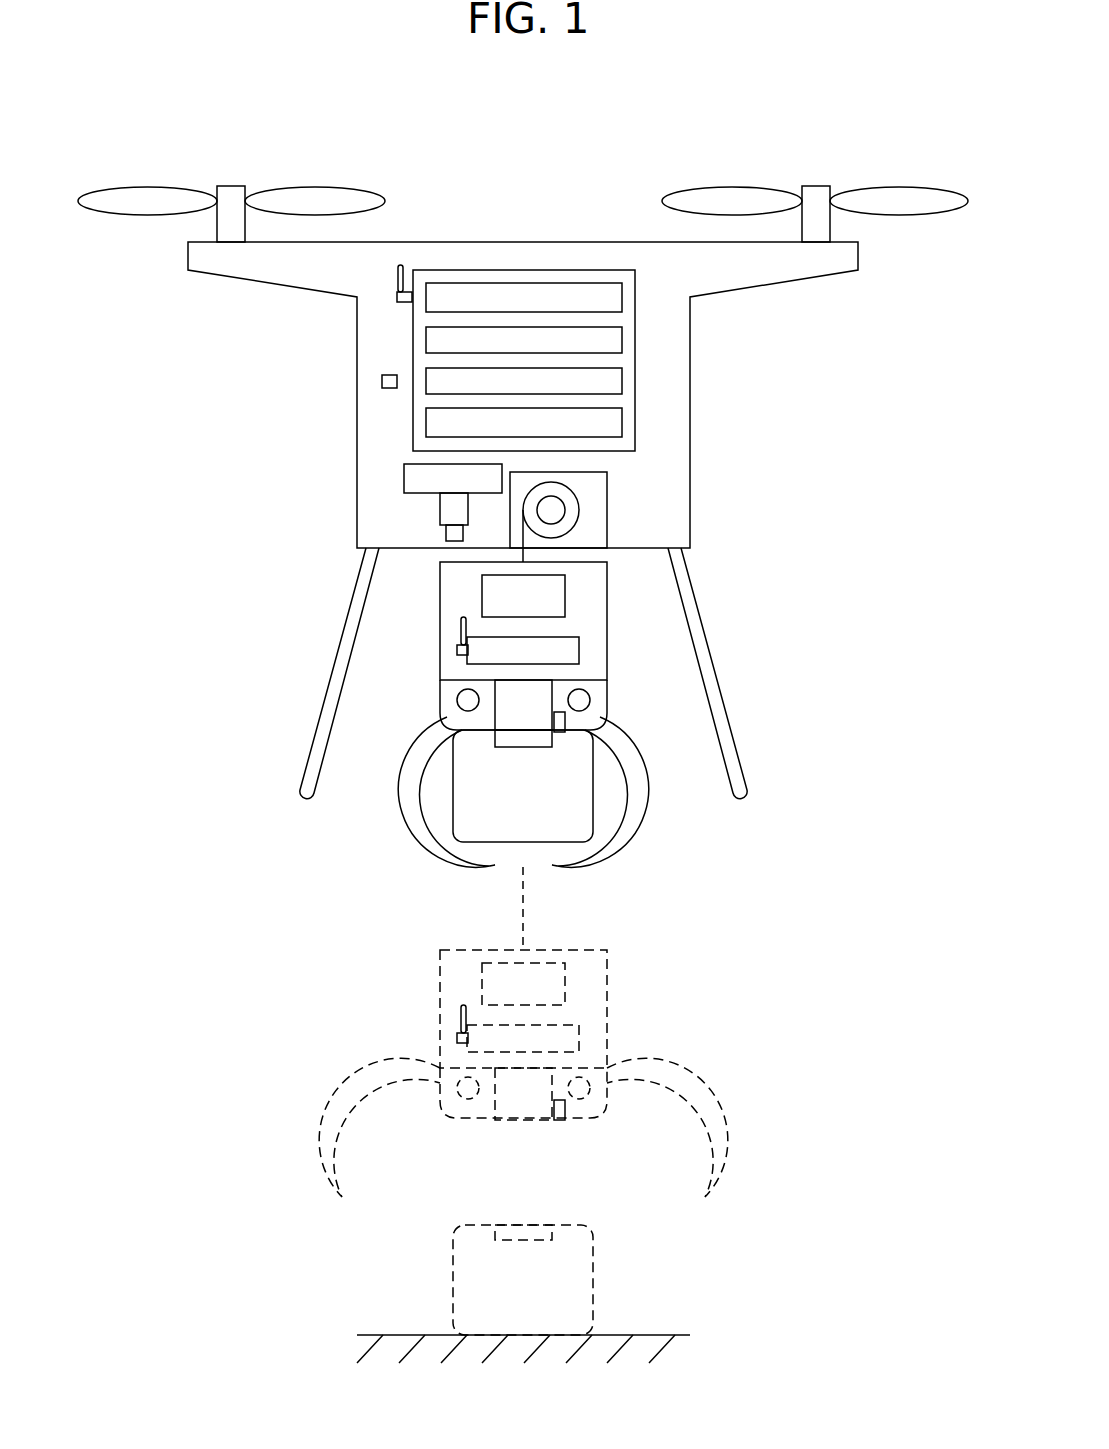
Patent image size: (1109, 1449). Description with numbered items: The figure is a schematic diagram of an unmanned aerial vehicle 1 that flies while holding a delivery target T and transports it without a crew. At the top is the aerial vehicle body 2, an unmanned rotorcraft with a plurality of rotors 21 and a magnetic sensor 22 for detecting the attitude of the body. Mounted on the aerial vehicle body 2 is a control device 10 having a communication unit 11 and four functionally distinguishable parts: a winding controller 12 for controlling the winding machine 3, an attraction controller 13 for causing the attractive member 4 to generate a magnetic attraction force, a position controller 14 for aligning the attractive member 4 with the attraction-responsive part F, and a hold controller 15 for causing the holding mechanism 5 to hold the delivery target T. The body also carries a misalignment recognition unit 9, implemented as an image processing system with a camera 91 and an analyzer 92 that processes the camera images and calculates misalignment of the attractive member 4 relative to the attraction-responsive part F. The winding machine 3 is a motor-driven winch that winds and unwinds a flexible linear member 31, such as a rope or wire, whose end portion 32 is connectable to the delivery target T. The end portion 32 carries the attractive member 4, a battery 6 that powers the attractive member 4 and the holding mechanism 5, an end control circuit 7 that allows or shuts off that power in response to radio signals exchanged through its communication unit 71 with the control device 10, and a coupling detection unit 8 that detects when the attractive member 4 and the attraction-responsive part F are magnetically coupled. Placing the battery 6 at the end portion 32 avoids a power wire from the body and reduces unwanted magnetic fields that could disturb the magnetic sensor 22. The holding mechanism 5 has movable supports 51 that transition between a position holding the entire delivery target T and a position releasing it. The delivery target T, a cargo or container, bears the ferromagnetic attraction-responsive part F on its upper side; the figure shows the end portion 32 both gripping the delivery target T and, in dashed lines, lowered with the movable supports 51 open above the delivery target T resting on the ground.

The unmanned aerial vehicle 1 is at (749, 130).
The aerial vehicle body 2 is at (621, 213).
The rotors 21 is at (160, 186).
The magnetic sensor 22 is at (382, 380).
The control device 10 is at (507, 253).
The communication unit 11 is at (357, 297).
The winding controller 12 is at (622, 297).
The attraction controller 13 is at (621, 338).
The position controller 14 is at (621, 381).
The hold controller 15 is at (621, 421).
The misalignment recognition unit 9 is at (378, 493).
The camera 91 is at (440, 509).
The analyzer 92 is at (404, 476).
The winding machine 3 is at (628, 503).
The linear member 31 is at (523, 542).
The end portion 32 is at (429, 935).
The battery 6 is at (482, 588).
The end control circuit 7 is at (596, 633).
The communication unit 71 is at (457, 630).
The holding mechanism 5 is at (623, 685).
The movable supports 51 is at (402, 812).
The attractive member 4 is at (495, 720).
The coupling detection unit 8 is at (568, 722).
The attraction-responsive part F is at (495, 738).
The delivery target T is at (440, 788).